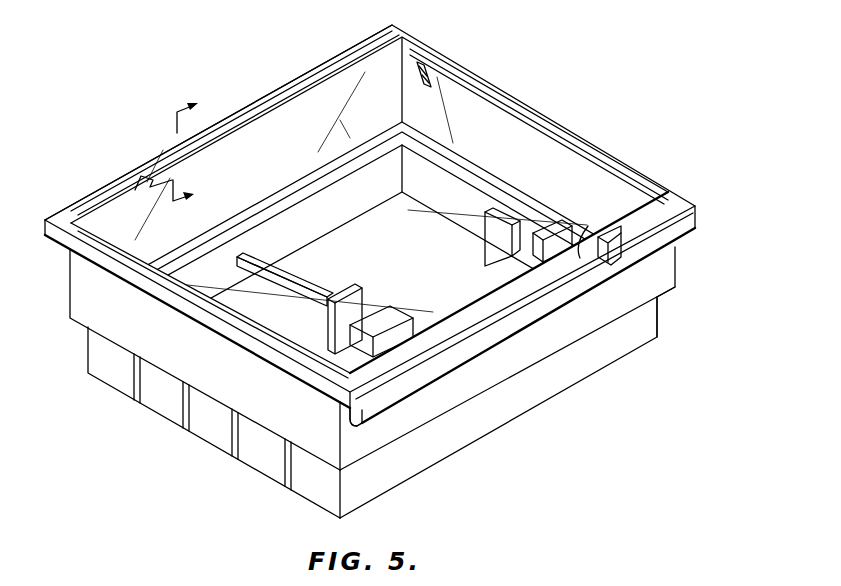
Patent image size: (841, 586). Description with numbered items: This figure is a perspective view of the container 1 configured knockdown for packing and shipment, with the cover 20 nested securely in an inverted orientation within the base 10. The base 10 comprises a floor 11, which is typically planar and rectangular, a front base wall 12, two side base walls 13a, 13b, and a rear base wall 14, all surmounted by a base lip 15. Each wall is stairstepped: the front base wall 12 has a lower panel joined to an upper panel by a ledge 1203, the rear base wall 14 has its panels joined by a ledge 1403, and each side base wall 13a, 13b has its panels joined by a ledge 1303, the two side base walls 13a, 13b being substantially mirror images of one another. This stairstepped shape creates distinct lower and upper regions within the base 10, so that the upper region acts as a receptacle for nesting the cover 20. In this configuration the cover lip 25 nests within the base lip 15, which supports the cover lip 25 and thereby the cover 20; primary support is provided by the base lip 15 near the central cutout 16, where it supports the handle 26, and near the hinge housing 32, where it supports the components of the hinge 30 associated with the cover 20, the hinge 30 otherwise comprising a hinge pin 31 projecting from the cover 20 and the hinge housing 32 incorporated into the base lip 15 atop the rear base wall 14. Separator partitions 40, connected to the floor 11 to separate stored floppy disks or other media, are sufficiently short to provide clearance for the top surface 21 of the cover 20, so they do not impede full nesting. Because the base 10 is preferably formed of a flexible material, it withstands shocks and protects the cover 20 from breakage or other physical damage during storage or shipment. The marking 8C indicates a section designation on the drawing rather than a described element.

The container 1 is at (672, 36).
The base 10 is at (604, 375).
The floor 11 is at (375, 251).
The front base wall 12 is at (417, 402).
The side base wall 13a is at (205, 360).
The side base wall 13b is at (507, 318).
The rear base wall 14 is at (375, 184).
The base lip 15 is at (677, 223).
The central cutout 16 is at (616, 277).
The cover 20 is at (499, 135).
The top surface 21 is at (477, 210).
The cover lip 25 is at (582, 256).
The handle 26 is at (472, 318).
The hinge 30 is at (240, 100).
The hinge pin 31 is at (262, 103).
The hinge housing 32 is at (313, 72).
The separator partitions 40 is at (328, 312).
The ledge 1203 is at (633, 300).
The ledge 1303 is at (425, 137).
The ledge 1403 is at (355, 148).
The section line 8C is at (184, 165).